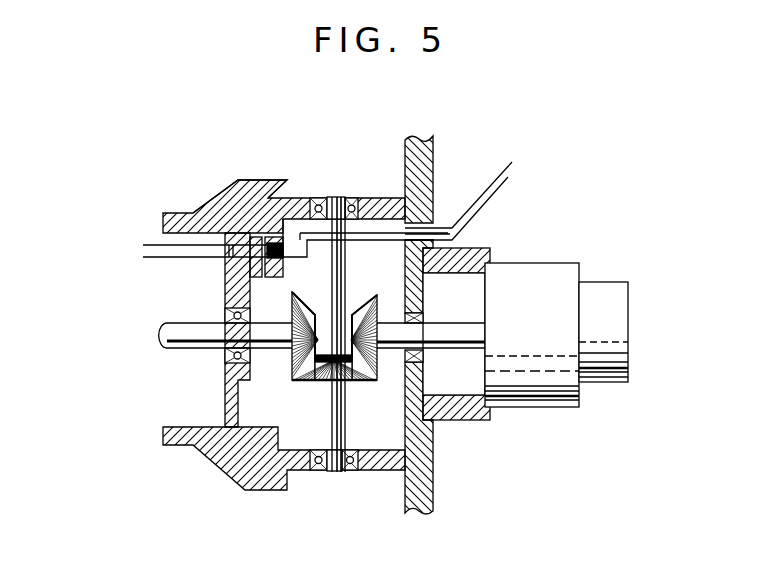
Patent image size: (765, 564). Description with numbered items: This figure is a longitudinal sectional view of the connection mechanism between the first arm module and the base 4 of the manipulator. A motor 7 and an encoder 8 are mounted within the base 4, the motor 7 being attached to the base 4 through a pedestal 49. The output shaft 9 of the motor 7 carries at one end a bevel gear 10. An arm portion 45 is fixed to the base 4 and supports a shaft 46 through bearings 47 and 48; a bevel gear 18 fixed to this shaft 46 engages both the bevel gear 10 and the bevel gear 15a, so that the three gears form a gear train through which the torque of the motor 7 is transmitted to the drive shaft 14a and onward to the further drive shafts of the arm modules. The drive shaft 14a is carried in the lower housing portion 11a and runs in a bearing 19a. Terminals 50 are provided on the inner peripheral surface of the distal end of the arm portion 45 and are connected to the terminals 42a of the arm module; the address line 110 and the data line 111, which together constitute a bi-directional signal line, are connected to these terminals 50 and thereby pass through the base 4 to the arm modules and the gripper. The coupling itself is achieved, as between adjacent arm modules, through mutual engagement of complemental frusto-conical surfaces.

The base 4 is at (430, 496).
The motor 7 is at (535, 270).
The encoder 8 is at (607, 290).
The output shaft 9 is at (453, 340).
The bevel gear 10 is at (382, 378).
The lower housing portion 11a is at (225, 467).
The drive shaft 14a is at (183, 348).
The bevel gear 15a is at (292, 366).
The bevel gear 18 is at (310, 382).
The bearing 19a is at (228, 360).
The terminals 42a is at (236, 232).
The arm portion 45 is at (303, 203).
The shaft 46 is at (333, 461).
The bearing 47 is at (357, 197).
The bearing 48 is at (350, 471).
The pedestal 49 is at (480, 413).
The terminals 50 is at (276, 240).
The address line 110 is at (155, 244).
The data line 111 is at (160, 258).